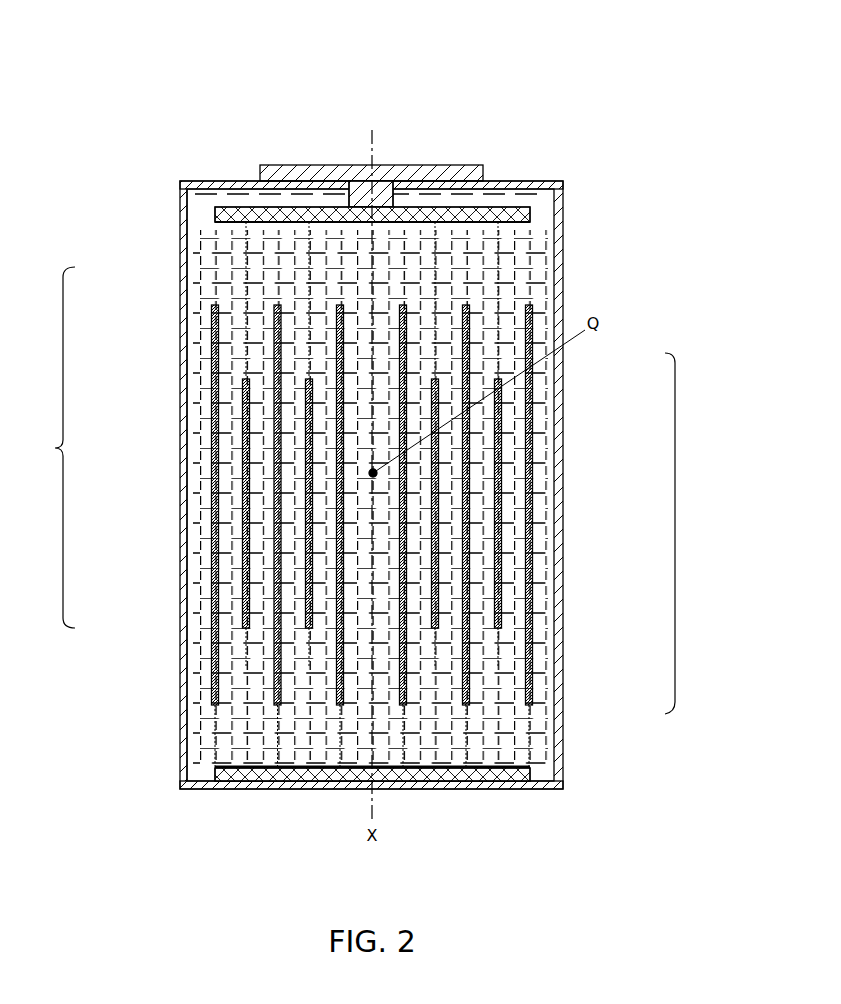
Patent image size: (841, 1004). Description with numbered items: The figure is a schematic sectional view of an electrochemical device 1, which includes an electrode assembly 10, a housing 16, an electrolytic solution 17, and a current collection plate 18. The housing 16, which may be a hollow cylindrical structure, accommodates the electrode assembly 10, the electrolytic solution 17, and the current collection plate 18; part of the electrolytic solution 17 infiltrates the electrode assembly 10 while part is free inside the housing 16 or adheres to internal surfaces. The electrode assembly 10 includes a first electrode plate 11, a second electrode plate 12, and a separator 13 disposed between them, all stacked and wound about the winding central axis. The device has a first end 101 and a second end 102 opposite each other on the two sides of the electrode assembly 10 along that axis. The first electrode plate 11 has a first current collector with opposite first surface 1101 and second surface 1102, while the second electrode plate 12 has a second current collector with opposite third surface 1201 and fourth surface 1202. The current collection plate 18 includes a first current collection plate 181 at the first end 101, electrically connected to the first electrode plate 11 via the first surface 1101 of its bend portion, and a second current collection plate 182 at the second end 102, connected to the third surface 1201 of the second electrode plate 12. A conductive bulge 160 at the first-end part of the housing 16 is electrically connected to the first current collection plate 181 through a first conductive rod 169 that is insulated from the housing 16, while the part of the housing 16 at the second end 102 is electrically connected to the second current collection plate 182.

The electrochemical device 1 is at (383, 52).
The electrode assembly 10 is at (691, 533).
The first electrode plate 11 is at (436, 382).
The second electrode plate 12 is at (530, 705).
The separator 13 is at (500, 453).
The housing 16 is at (548, 183).
The conductive bulge 160 is at (433, 167).
The first conductive rod 169 is at (356, 195).
The electrolytic solution 17 is at (445, 790).
The current collection plate 18 is at (48, 447).
The first current collection plate 181 is at (218, 222).
The second current collection plate 182 is at (215, 770).
The first end 101 is at (228, 175).
The second end 102 is at (272, 795).
The first surface 1101 is at (270, 212).
The second surface 1102 is at (297, 226).
The third surface 1201 is at (520, 776).
The fourth surface 1202 is at (505, 765).